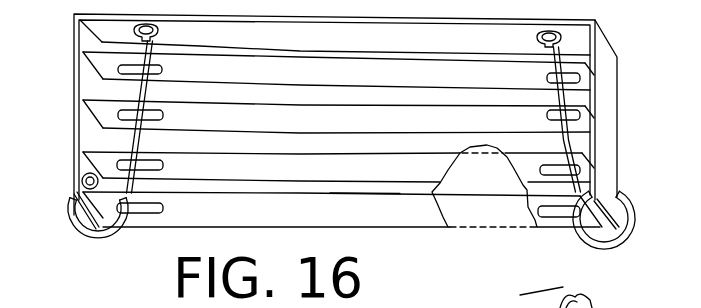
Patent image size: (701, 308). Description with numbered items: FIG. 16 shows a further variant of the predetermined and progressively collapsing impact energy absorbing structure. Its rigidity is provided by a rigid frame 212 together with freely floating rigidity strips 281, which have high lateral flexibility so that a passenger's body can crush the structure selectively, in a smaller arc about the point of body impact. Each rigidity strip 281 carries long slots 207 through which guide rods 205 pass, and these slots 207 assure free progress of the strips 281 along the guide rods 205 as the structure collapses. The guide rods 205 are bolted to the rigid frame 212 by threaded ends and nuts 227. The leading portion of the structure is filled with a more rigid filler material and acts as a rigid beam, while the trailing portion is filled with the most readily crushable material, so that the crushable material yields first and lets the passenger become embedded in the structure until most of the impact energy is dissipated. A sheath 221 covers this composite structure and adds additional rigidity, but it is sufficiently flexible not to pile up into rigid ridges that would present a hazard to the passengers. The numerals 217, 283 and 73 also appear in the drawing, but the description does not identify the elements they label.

The rigid frame 212 is at (627, 128).
The nut 217 is at (540, 43).
The long slots 207 is at (162, 70).
The guide rods 205 is at (163, 117).
The nuts 227 is at (82, 174).
The sheath 221 is at (484, 186).
The freely floating rigidity strips 281 is at (342, 209).
The slat edge 283 is at (360, 192).
The adjacent element 73 is at (575, 297).